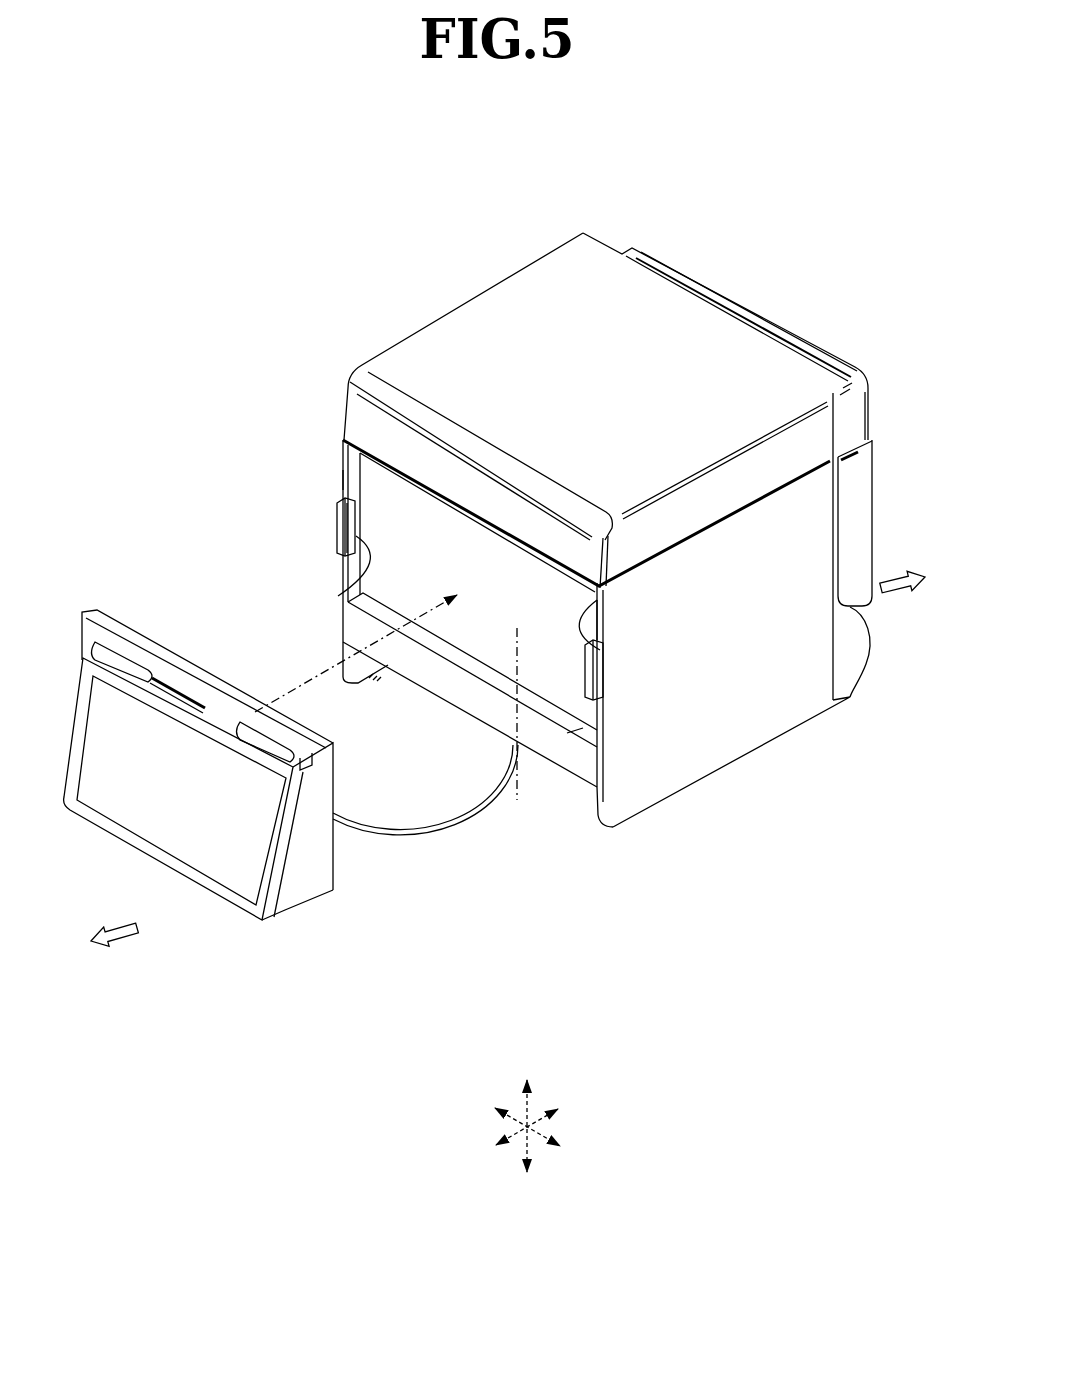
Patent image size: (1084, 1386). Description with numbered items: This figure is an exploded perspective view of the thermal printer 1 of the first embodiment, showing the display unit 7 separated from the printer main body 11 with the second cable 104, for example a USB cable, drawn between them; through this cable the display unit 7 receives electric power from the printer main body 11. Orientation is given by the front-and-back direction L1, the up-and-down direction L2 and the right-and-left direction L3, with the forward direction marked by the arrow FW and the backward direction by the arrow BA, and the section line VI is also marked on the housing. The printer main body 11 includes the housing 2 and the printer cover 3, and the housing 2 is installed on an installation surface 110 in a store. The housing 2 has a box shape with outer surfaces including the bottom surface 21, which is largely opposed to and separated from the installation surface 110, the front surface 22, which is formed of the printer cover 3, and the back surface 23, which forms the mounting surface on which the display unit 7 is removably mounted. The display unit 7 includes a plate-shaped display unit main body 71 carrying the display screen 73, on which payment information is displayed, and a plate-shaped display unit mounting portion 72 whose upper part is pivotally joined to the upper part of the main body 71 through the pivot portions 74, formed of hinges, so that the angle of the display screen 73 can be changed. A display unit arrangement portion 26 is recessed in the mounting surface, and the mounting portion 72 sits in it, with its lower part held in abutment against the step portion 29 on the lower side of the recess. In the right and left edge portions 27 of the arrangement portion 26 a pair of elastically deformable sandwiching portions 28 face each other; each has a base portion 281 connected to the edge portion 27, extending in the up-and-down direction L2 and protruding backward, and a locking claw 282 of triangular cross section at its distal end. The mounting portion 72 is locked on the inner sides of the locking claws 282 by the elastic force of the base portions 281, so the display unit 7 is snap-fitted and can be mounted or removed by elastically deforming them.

The printer 1 is at (469, 245).
The printer main body 11 is at (774, 313).
The housing 2 is at (734, 726).
The bottom surface 21 is at (788, 734).
The front surface 22 is at (869, 403).
The back surface 23 is at (345, 448).
The display unit arrangement portion 26 is at (453, 538).
The edge portions 27 is at (342, 479).
The sandwiching portions 28 is at (338, 535).
The base portion 281 is at (375, 580).
The locking claw 282 is at (348, 537).
The step portion 29 is at (567, 733).
The printer cover 3 is at (856, 470).
The display unit 7 is at (101, 834).
The display unit main body 71 is at (260, 905).
The display unit mounting portion 72 is at (327, 867).
The display screen 73 is at (167, 813).
The pivot portions 74 is at (121, 660).
The second cable 104 is at (437, 832).
The installation surface 110 is at (459, 992).
The forward direction FW is at (887, 581).
The backward direction BA is at (133, 937).
The section line VI is at (521, 651).
The front-and-back direction L1 is at (538, 1122).
The up-and-down direction L2 is at (523, 1148).
The right-and-left direction L3 is at (541, 1135).